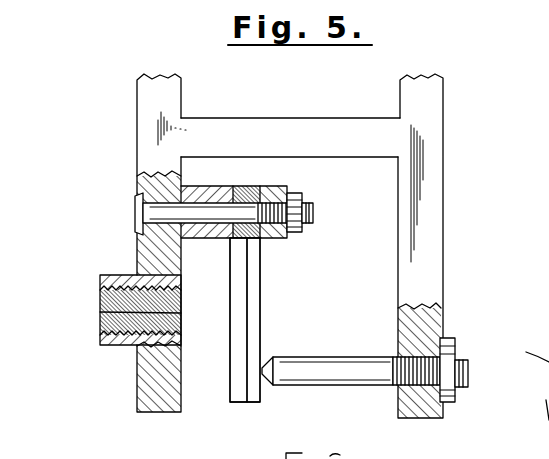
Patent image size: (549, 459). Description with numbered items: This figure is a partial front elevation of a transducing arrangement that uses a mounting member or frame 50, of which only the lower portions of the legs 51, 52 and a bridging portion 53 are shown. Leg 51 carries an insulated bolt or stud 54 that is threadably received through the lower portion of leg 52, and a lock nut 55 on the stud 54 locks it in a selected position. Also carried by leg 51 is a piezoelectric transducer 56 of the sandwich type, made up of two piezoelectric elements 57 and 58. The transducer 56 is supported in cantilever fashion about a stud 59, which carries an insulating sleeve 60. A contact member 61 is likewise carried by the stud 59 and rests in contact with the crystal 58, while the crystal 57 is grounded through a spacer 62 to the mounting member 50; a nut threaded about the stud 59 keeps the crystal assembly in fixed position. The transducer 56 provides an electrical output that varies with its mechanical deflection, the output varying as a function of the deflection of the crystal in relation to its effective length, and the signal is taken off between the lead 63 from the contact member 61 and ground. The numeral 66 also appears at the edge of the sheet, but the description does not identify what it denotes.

The mounting member or frame 50 is at (389, 73).
The leg 51 is at (144, 166).
The leg 52 is at (433, 207).
The bridging portion 53 is at (317, 136).
The insulated bolt or stud 54 is at (370, 351).
The lock nut 55 is at (452, 343).
The piezoelectric transducer 56 is at (259, 320).
The piezoelectric element 57 is at (236, 352).
The piezoelectric element 58 is at (252, 347).
The stud 59 is at (240, 213).
The insulating sleeve 60 is at (251, 200).
The contact member 61 is at (289, 237).
The spacer 62 is at (221, 238).
The lead 63 is at (282, 243).
The member of adjacent figure 66 is at (548, 202).